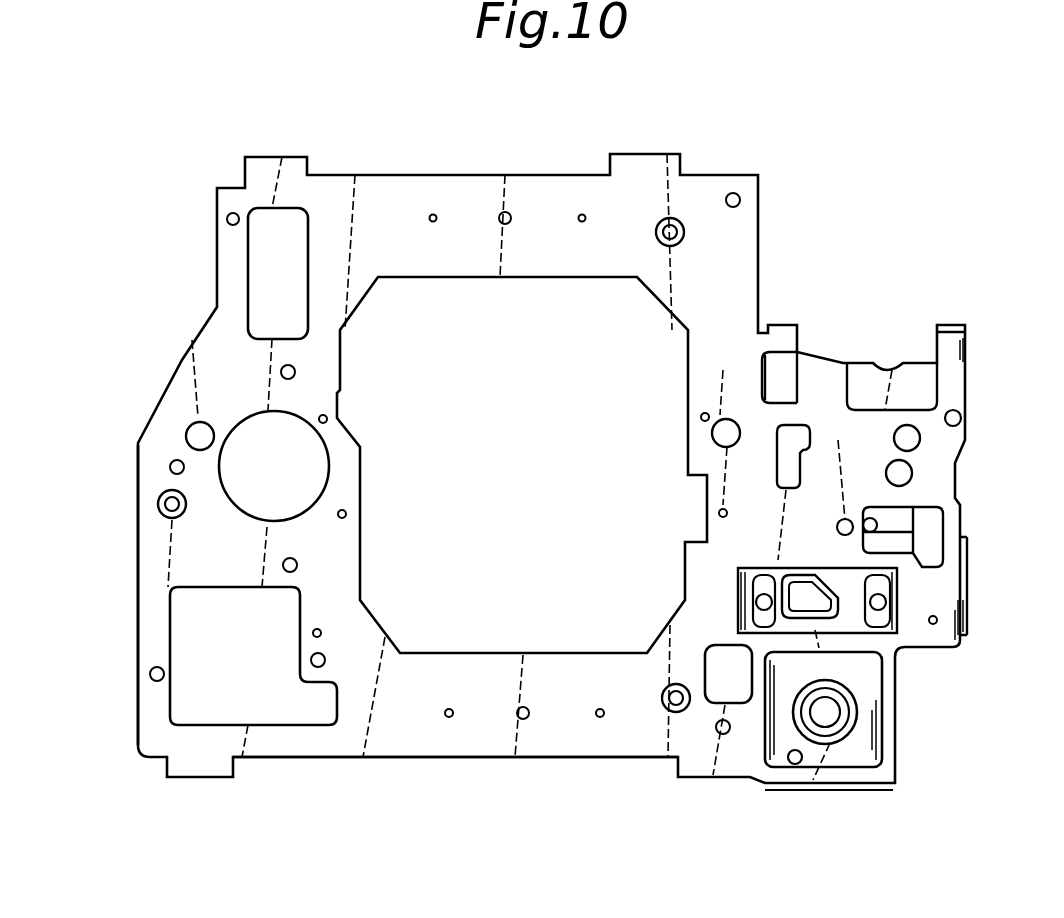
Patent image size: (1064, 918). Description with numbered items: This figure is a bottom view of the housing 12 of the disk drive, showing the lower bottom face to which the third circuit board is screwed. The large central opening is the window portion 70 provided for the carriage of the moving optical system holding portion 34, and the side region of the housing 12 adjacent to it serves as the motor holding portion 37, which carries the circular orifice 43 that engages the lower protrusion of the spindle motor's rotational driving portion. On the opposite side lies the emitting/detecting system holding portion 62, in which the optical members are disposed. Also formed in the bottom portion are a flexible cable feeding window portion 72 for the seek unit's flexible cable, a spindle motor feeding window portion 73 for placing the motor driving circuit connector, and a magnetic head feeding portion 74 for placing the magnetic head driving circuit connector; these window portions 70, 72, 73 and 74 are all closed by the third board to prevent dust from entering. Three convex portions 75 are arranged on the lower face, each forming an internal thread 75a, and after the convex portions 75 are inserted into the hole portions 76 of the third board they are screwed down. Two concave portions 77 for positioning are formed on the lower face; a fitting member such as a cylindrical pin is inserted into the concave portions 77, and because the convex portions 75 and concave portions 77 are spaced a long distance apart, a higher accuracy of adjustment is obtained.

The housing 12 is at (392, 735).
The moving optical system holding portion 34 is at (502, 756).
The motor holding portion 37 is at (138, 621).
The orifice 43 is at (310, 475).
The emitting/detecting system holding portion 62 is at (960, 491).
The window portion 70 is at (538, 298).
The flexible cable feeding window portion 72 is at (190, 688).
The spindle motor feeding window portion 73 is at (265, 263).
The magnetic head feeding portion 74 is at (740, 672).
The convex portion 75 is at (676, 218).
The internal thread 75a is at (684, 236).
The hole portion 76 is at (197, 432).
The concave portion 77 is at (728, 420).